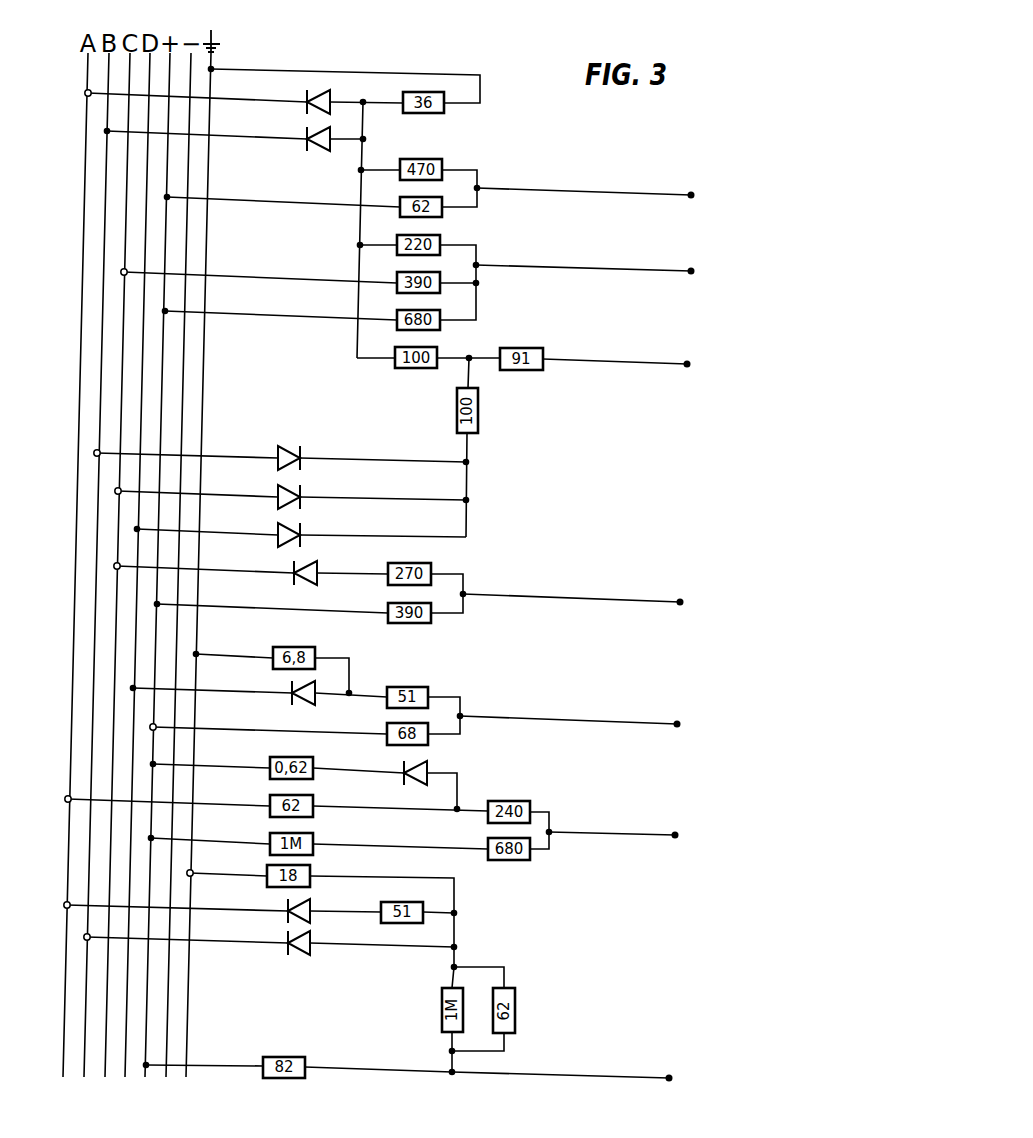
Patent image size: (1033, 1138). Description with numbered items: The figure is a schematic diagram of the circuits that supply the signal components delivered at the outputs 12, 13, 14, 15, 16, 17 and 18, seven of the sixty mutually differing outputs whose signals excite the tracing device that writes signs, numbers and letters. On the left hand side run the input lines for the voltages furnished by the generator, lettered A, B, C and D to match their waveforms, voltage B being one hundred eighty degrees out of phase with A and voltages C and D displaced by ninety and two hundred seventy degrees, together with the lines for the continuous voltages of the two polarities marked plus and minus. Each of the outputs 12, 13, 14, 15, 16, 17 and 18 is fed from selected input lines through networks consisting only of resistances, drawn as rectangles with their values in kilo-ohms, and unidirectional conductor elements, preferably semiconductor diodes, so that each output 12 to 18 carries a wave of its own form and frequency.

The output 12 is at (586, 184).
The output 13 is at (585, 260).
The output 14 is at (617, 354).
The output 15 is at (573, 588).
The output 16 is at (570, 711).
The output 17 is at (614, 822).
The output 18 is at (562, 1065).